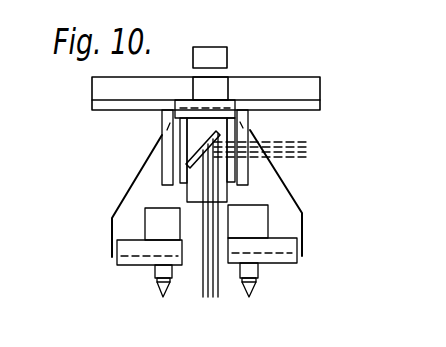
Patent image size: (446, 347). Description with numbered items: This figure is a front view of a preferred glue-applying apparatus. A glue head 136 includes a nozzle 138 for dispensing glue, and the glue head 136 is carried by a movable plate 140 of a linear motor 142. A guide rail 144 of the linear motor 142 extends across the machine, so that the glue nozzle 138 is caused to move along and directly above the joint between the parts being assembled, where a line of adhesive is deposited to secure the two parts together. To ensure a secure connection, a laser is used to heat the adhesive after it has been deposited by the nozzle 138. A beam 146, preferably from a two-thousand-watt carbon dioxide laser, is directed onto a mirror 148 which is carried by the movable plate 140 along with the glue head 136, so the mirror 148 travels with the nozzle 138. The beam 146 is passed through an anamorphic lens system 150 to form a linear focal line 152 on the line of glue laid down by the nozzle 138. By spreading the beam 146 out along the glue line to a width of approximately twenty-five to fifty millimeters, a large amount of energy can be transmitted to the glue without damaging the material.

The glue head 136 is at (153, 223).
The nozzle 138 is at (162, 295).
The movable plate 140 is at (97, 112).
The linear motor 142 is at (222, 92).
The guide rail 144 is at (222, 58).
The beam 146 is at (205, 190).
The mirror 148 is at (197, 148).
The anamorphic lens system 150 is at (226, 197).
The linear focal line 152 is at (203, 288).